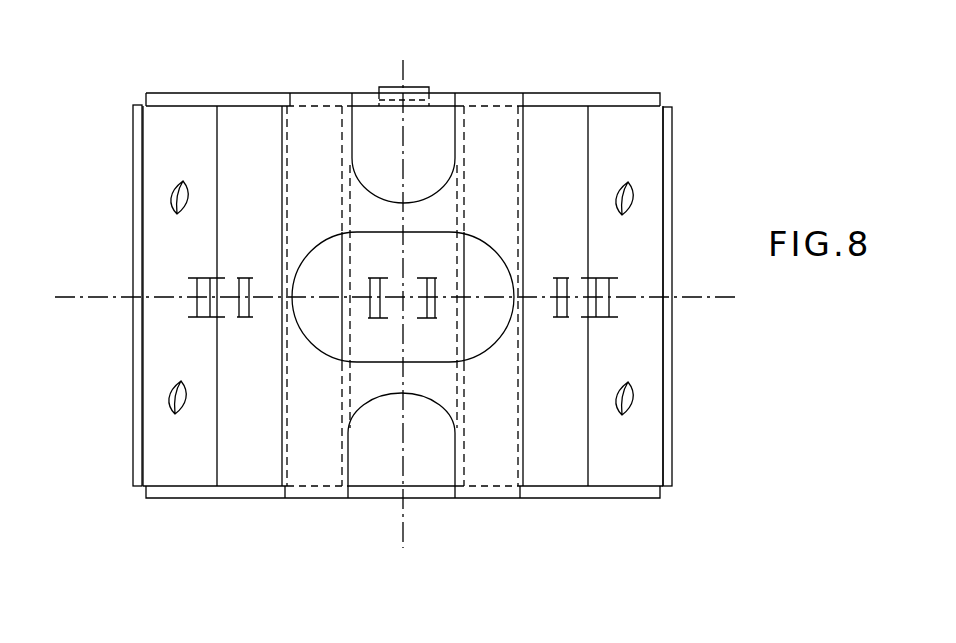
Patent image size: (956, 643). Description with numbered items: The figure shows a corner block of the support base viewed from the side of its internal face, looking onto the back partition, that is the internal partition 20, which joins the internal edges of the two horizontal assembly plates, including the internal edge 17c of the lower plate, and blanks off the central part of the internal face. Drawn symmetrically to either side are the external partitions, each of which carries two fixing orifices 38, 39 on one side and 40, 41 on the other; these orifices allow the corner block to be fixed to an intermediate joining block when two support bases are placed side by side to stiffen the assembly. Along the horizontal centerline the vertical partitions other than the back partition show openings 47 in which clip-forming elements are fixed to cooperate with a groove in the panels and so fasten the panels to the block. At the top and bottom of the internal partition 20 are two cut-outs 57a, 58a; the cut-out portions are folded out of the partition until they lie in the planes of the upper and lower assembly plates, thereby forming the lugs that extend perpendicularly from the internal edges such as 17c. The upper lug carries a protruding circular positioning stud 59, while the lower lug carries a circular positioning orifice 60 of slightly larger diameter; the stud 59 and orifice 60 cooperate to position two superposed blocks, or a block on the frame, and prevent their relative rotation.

The protruding circular positioning stud 59 is at (396, 88).
The cut-out 57a is at (455, 145).
The cut-out 58a is at (454, 440).
The circular positioning orifice 60 is at (387, 498).
The internal edge 17c is at (433, 500).
The internal partition 20 is at (487, 320).
The fixing orifice 38 is at (178, 196).
The fixing orifice 39 is at (176, 398).
The fixing orifice 40 is at (626, 200).
The fixing orifice 41 is at (626, 400).
The opening 47 is at (200, 317).